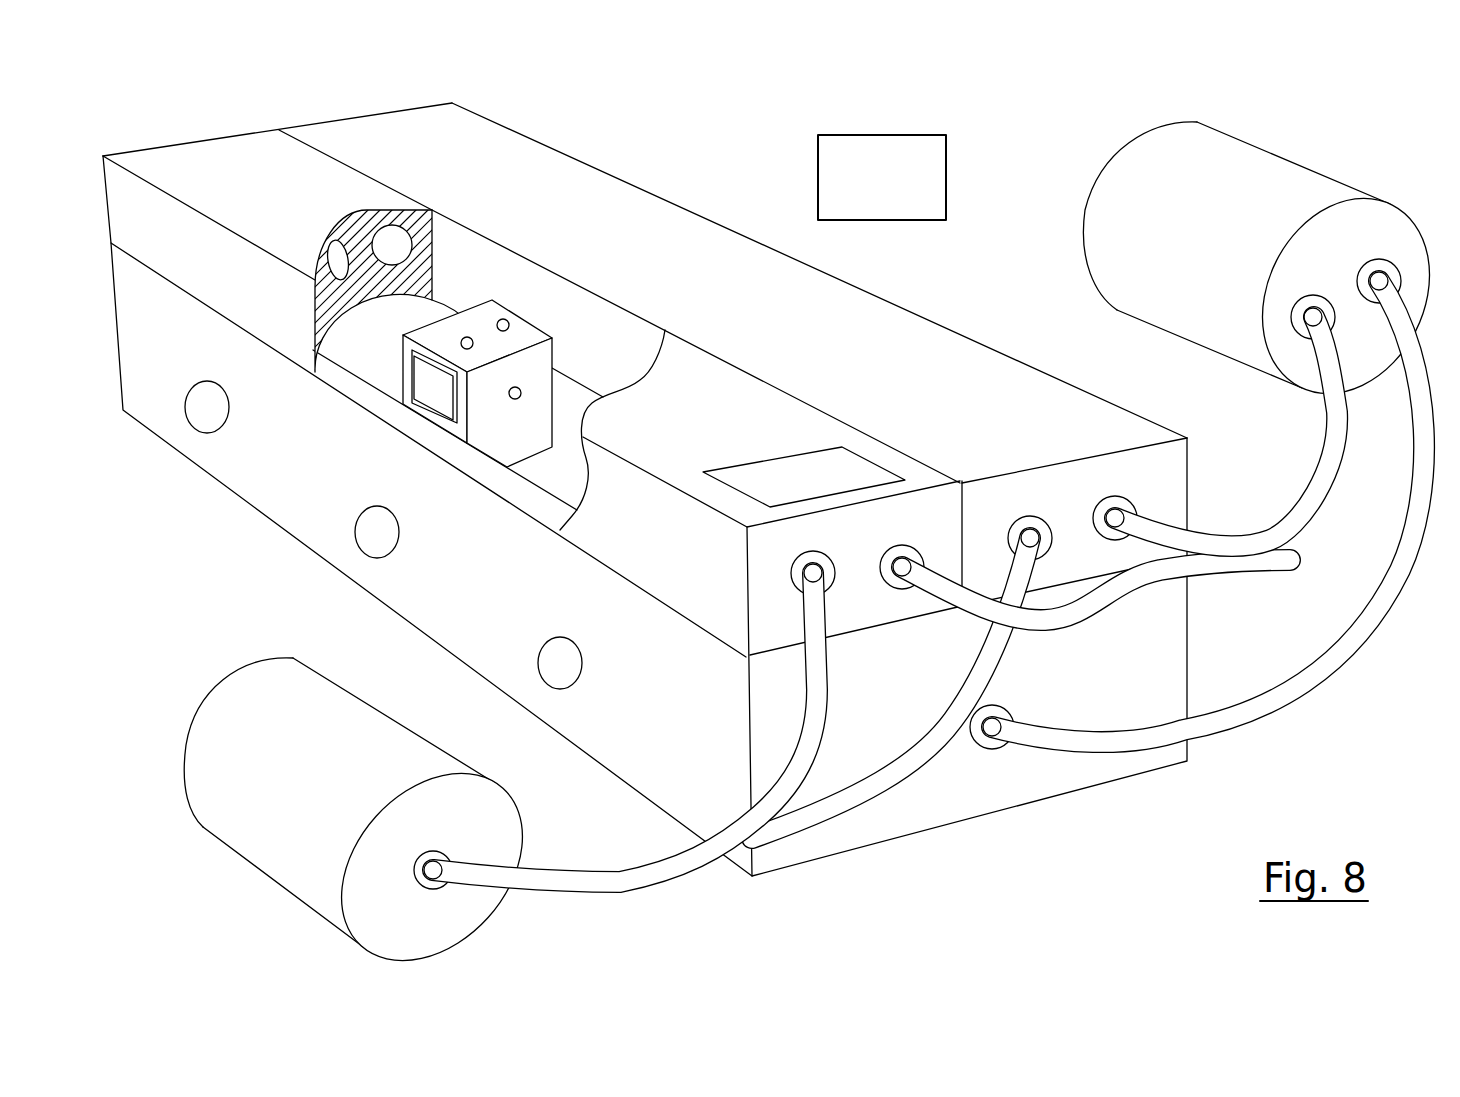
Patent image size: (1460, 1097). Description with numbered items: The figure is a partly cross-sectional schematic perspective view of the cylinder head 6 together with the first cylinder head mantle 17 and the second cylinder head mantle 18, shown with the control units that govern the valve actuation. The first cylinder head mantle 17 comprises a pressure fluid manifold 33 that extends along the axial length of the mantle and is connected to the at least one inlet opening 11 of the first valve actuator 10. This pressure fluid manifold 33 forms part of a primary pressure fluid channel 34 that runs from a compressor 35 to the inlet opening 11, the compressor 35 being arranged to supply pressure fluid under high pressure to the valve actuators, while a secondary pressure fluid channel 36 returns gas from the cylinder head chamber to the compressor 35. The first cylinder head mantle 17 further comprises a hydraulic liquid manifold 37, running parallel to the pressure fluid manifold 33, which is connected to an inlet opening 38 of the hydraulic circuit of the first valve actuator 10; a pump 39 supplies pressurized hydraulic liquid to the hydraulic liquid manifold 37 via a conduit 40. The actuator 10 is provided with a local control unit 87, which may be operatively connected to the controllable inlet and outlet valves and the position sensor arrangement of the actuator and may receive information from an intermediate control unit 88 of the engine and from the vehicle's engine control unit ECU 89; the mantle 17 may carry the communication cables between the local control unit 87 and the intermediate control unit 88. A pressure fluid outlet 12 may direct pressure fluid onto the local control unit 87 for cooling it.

The cylinder head 6 is at (255, 470).
The first valve actuator 10 is at (428, 420).
The inlet opening 11 is at (503, 319).
The pressure fluid outlet 12 is at (521, 393).
The first cylinder head mantle 17 is at (215, 152).
The second cylinder head mantle 18 is at (377, 133).
The pressure fluid manifold 33 is at (392, 243).
The primary pressure fluid channel 34 is at (1292, 502).
The compressor 35 is at (1300, 183).
The secondary pressure fluid channel 36 is at (1320, 688).
The hydraulic liquid manifold 37 is at (338, 259).
The inlet opening 38 is at (467, 337).
The pump 39 is at (287, 690).
The conduit 40 is at (633, 866).
The local control unit 87 is at (423, 375).
The intermediate control unit 88 is at (830, 463).
The engine control unit ECU 89 is at (908, 160).